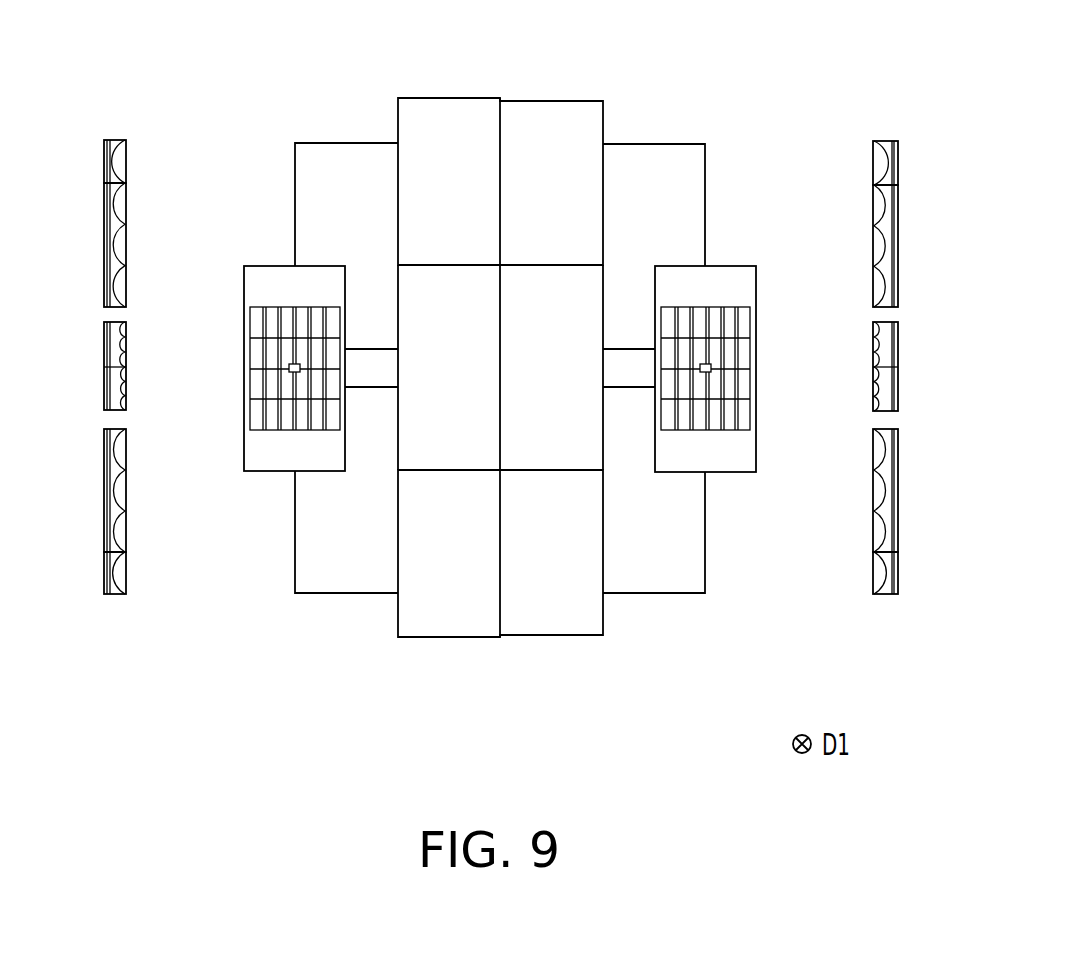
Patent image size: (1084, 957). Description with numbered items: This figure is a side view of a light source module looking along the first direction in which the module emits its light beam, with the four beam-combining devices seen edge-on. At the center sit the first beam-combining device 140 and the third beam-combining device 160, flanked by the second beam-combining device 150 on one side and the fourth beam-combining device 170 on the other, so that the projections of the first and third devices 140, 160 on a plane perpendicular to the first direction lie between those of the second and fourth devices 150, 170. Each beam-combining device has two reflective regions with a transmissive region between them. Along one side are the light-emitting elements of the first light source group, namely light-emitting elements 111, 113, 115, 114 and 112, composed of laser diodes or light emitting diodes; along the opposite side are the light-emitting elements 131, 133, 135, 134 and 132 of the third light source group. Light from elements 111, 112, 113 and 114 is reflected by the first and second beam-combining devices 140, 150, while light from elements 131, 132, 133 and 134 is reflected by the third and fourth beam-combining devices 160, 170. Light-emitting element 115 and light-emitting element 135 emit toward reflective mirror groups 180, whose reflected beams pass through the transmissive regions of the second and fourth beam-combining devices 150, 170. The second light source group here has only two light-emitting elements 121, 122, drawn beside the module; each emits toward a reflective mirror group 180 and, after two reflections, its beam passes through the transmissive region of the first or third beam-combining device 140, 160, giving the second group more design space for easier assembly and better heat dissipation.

The light-emitting element 111 is at (107, 183).
The light-emitting element 112 is at (107, 566).
The light-emitting element 113 is at (107, 276).
The light-emitting element 114 is at (107, 466).
The light-emitting element 115 is at (107, 362).
The light-emitting element 121 is at (252, 358).
The light-emitting element 122 is at (745, 348).
The light-emitting element 131 is at (899, 165).
The light-emitting element 132 is at (898, 583).
The light-emitting element 133 is at (899, 262).
The light-emitting element 134 is at (898, 483).
The light-emitting element 135 is at (898, 346).
The first beam-combining device 140 is at (449, 97).
The second beam-combining device 150 is at (345, 142).
The third beam-combining device 160 is at (548, 637).
The fourth beam-combining device 170 is at (657, 594).
The reflective mirror group 180 is at (593, 297).